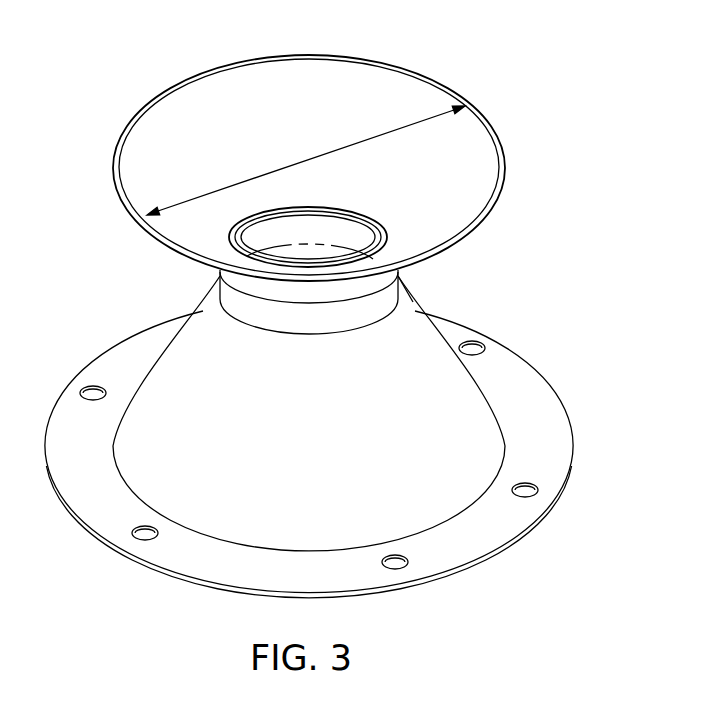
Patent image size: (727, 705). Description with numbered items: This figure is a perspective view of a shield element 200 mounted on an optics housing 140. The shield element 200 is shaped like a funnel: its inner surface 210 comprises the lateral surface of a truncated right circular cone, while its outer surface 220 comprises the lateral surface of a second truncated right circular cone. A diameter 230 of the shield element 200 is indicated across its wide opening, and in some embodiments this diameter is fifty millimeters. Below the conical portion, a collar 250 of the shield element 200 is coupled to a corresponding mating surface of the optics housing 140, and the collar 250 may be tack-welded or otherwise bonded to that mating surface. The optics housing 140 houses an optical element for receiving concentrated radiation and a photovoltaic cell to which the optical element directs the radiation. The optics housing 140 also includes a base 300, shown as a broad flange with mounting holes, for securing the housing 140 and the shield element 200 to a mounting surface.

The shield element 200 is at (312, 55).
The inner surface 210 is at (448, 204).
The outer surface 220 is at (321, 303).
The diameter 230 is at (284, 167).
The collar 250 is at (318, 328).
The optics housing 140 is at (414, 302).
The base 300 is at (530, 393).